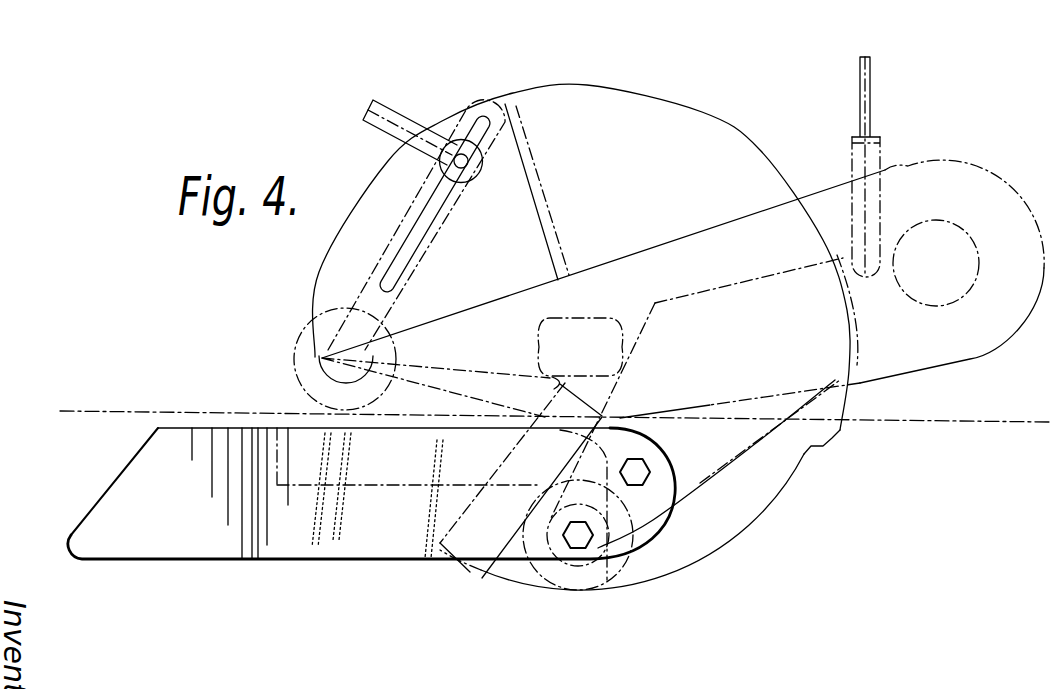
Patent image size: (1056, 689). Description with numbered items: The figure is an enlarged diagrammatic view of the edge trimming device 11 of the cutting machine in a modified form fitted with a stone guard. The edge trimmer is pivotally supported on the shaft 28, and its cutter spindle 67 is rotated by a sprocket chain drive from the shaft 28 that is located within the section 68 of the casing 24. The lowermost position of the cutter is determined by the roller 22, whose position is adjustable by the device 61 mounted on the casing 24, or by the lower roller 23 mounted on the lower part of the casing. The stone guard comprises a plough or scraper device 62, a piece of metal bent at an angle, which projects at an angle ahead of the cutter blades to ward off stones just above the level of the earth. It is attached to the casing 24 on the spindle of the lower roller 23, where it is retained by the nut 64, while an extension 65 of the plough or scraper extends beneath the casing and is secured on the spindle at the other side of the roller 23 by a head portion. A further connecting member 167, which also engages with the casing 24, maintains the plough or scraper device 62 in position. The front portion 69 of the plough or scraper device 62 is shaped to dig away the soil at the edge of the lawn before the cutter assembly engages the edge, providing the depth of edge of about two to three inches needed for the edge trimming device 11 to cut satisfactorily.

The edge trimming device 11 is at (770, 151).
The roller 22 is at (297, 351).
The lower roller 23 is at (576, 582).
The casing 24 is at (702, 132).
The shaft 28 is at (951, 305).
The device 61 is at (424, 166).
The plough or scraper device 62 is at (186, 540).
The nut 64 is at (600, 533).
The extension 65 is at (408, 477).
The cutter spindle 67 is at (618, 297).
The section of the casing 68 is at (746, 240).
The front portion 69 is at (113, 492).
The connecting member 167 is at (651, 475).